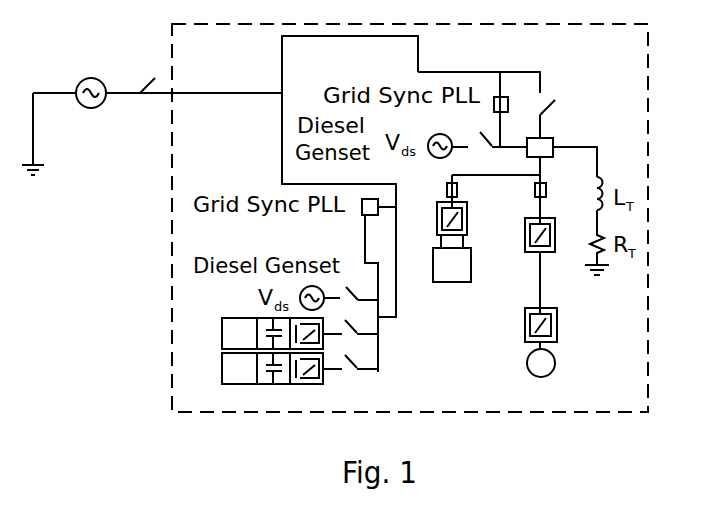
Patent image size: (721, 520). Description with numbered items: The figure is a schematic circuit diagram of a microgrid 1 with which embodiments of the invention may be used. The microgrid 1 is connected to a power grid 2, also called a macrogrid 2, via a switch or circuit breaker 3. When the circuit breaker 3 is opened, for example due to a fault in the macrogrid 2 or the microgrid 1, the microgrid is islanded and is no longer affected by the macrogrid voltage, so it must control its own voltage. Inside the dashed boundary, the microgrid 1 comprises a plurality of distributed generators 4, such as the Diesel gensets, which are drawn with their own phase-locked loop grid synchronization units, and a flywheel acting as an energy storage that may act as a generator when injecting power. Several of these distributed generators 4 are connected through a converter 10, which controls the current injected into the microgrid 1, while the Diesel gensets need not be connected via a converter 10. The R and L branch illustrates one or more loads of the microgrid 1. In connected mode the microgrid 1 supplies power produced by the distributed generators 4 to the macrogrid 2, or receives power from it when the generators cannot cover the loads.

The microgrid 1 is at (633, 0).
The power grid 2 is at (93, 80).
The circuit breaker 3 is at (155, 78).
The distributed generator 4 is at (220, 333).
The converter 10 is at (297, 384).